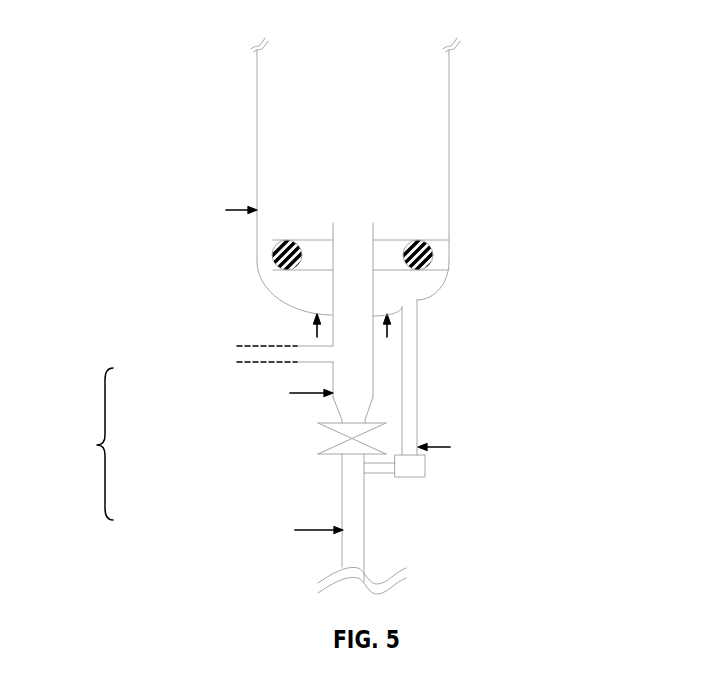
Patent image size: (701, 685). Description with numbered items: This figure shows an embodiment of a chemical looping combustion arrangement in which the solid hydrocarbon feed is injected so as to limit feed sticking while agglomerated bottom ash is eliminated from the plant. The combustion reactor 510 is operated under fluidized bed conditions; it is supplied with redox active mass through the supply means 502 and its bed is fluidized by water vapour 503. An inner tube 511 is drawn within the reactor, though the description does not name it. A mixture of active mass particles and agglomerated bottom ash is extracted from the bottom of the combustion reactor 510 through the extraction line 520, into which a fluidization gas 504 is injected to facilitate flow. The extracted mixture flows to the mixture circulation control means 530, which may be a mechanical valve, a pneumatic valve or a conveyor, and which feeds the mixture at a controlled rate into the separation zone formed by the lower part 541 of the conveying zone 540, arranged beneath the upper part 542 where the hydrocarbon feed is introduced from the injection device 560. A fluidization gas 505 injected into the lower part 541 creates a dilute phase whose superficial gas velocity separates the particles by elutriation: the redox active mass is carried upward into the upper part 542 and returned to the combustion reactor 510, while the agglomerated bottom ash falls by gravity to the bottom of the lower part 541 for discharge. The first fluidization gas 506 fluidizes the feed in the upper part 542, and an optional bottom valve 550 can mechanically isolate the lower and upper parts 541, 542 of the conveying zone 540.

The supply means 502 is at (228, 210).
The water vapour 503 is at (434, 255).
The fluidization gas 504 is at (438, 446).
The fluidization gas 505 is at (306, 531).
The first fluidization gas 506 is at (303, 395).
The combustion reactor 510 is at (448, 95).
The inner tube 511 is at (395, 242).
The extraction line 520 is at (417, 347).
The mixture circulation control means 530 is at (415, 477).
The conveying zone 540 is at (72, 444).
The lower part of conveying zone 541 is at (343, 506).
The upper part of conveying zone 542 is at (333, 381).
The bottom valve 550 is at (320, 455).
The injection device 560 is at (296, 346).